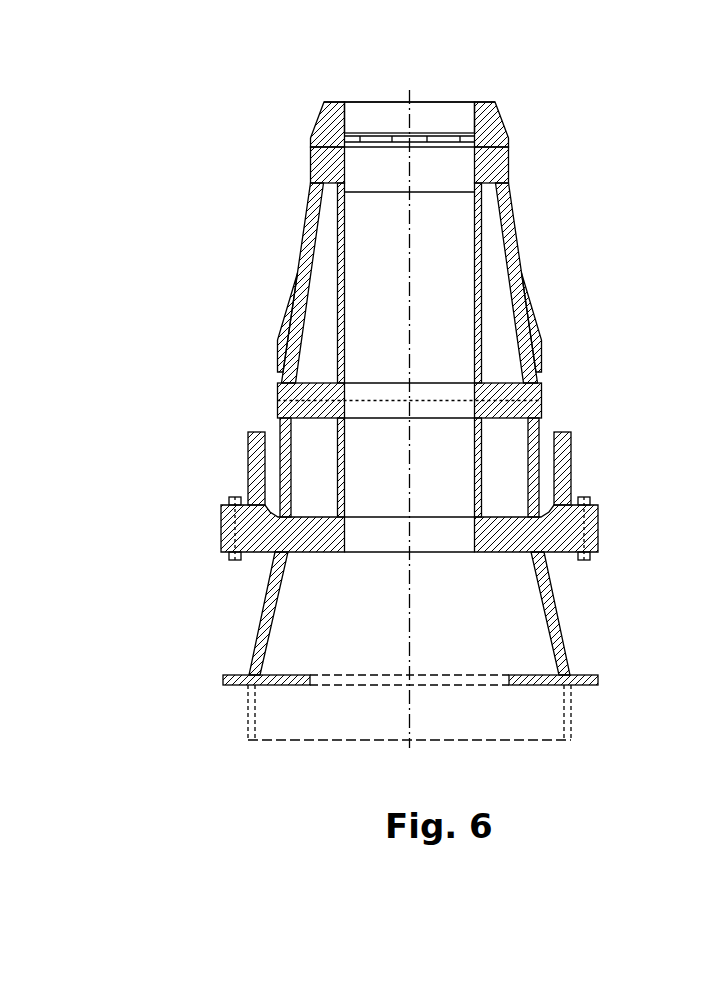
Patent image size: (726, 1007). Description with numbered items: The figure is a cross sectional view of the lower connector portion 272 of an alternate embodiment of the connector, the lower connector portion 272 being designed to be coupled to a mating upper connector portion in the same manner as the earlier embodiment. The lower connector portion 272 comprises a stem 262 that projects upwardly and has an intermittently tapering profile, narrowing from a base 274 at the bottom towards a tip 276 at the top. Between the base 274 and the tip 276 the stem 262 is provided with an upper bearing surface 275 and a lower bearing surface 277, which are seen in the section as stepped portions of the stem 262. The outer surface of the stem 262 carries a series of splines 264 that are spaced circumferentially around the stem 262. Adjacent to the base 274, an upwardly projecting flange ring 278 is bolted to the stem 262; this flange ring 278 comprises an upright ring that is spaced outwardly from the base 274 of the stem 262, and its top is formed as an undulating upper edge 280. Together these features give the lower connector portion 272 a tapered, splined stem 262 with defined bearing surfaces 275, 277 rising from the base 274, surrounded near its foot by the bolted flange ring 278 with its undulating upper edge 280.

The lower connector portion 272 is at (415, 419).
The tip 276 is at (537, 132).
The upper bearing surface 275 is at (311, 172).
The stem 262 is at (575, 325).
The splines 264 is at (284, 324).
The lower bearing surface 277 is at (279, 398).
The flange ring 278 is at (249, 473).
The undulating upper edge 280 is at (579, 430).
The base 274 is at (580, 631).